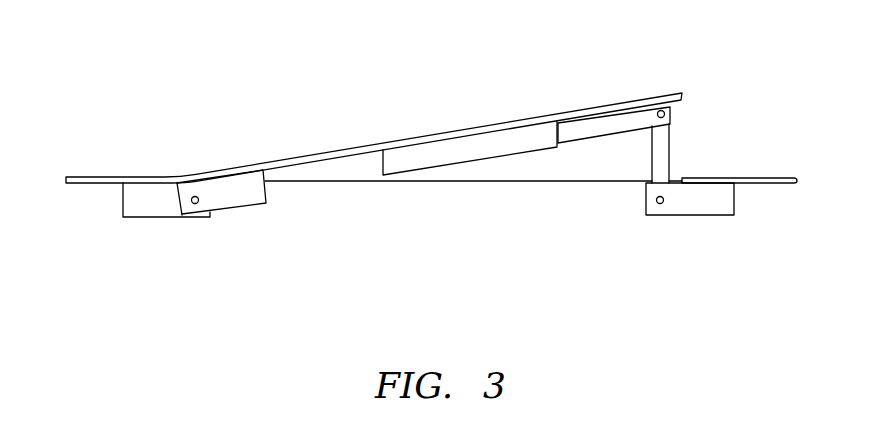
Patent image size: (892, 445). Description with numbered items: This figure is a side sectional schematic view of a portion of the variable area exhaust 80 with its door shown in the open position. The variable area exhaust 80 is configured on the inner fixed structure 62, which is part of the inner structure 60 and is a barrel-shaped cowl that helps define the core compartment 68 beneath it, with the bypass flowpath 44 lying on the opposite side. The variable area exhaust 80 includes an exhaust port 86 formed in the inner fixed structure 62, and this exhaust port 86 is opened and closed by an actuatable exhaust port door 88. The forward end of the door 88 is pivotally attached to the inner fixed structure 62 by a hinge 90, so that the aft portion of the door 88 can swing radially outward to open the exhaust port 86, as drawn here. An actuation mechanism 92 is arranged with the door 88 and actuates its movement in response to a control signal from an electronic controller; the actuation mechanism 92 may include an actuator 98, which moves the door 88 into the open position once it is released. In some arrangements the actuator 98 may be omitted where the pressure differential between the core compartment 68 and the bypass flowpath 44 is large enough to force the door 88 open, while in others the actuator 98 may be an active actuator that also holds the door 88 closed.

The inner structure 60 is at (222, 77).
The inner fixed structure 62 is at (93, 176).
The bypass flowpath 44 is at (428, 67).
The core compartment 68 is at (450, 294).
The exhaust port door 88 is at (568, 110).
The exhaust port 86 is at (596, 195).
The hinge 90 is at (192, 215).
The actuation mechanism 92 is at (653, 242).
The actuator 98 is at (697, 215).
The variable area exhaust 80 is at (722, 131).